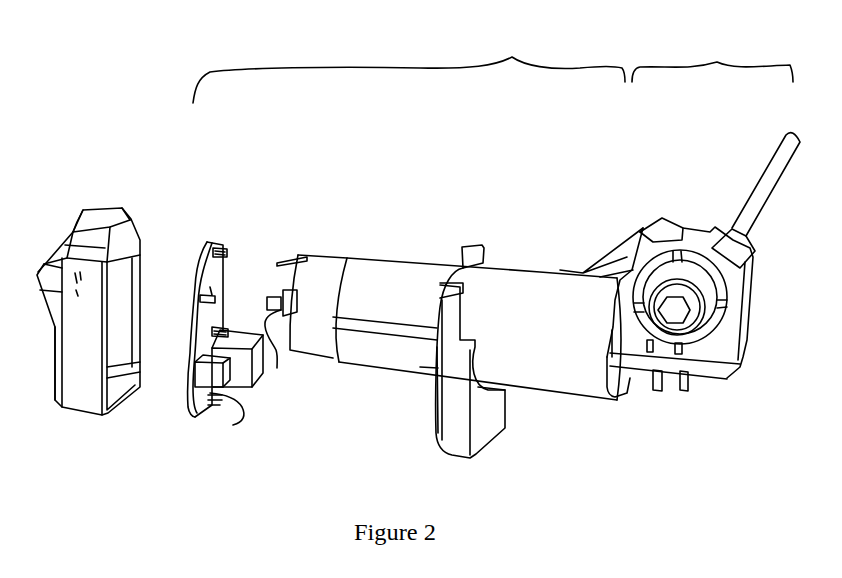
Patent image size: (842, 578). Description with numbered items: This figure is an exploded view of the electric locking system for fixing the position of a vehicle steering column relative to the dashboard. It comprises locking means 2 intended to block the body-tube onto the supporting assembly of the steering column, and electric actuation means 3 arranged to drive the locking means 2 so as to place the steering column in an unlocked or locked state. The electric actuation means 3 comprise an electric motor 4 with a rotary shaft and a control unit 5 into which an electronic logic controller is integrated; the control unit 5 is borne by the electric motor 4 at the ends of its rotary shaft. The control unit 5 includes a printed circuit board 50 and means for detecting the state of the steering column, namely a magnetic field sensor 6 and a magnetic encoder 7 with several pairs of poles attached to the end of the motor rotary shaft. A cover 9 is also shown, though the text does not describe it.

The locking means 2 is at (680, 210).
The electric actuation means 3 is at (409, 57).
The electric motor 4 is at (375, 340).
The control unit 5 is at (228, 205).
The printed circuit board 50 is at (210, 277).
The magnetic field sensor 6 is at (200, 327).
The magnetic encoder 7 is at (277, 368).
The housing cover 9 is at (113, 203).